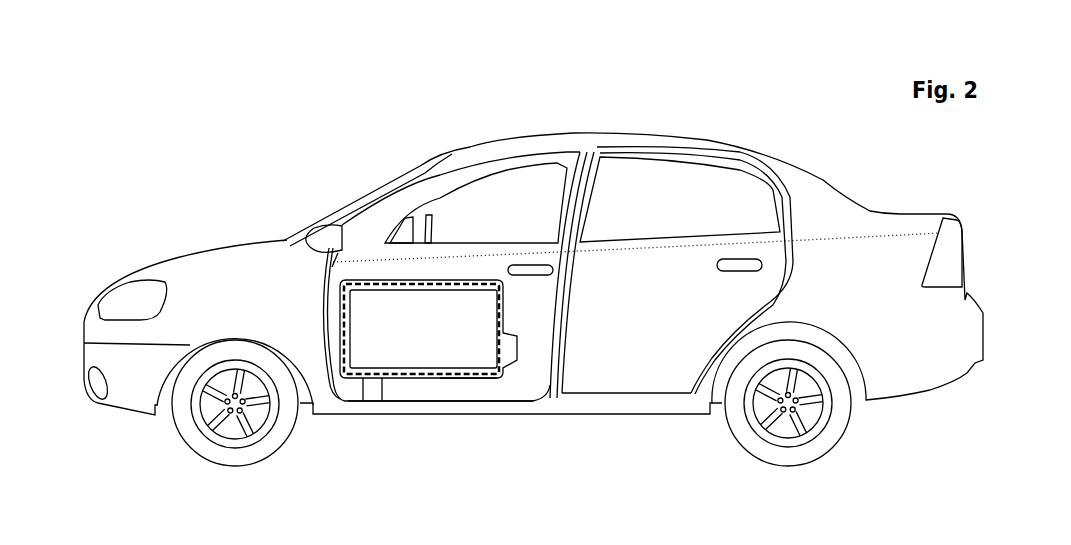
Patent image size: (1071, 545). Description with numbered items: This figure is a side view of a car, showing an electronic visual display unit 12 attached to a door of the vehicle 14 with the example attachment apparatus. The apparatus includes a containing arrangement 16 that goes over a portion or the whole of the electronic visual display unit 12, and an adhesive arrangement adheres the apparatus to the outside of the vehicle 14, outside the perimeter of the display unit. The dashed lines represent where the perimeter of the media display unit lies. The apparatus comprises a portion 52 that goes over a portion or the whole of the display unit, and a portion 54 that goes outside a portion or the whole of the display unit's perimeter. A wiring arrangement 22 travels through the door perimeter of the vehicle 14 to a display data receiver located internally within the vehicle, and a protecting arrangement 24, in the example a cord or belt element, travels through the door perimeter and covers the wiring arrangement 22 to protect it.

The vehicle 14 is at (243, 172).
The electronic visual display unit 12 is at (422, 305).
The containing arrangement 16 is at (473, 280).
The portion that goes over the electronic media display unit 52 is at (347, 318).
The wiring arrangement 22 is at (382, 401).
The protecting arrangement 24 is at (358, 392).
The portion that goes outside the perimeter of the media display unit 54 is at (475, 375).